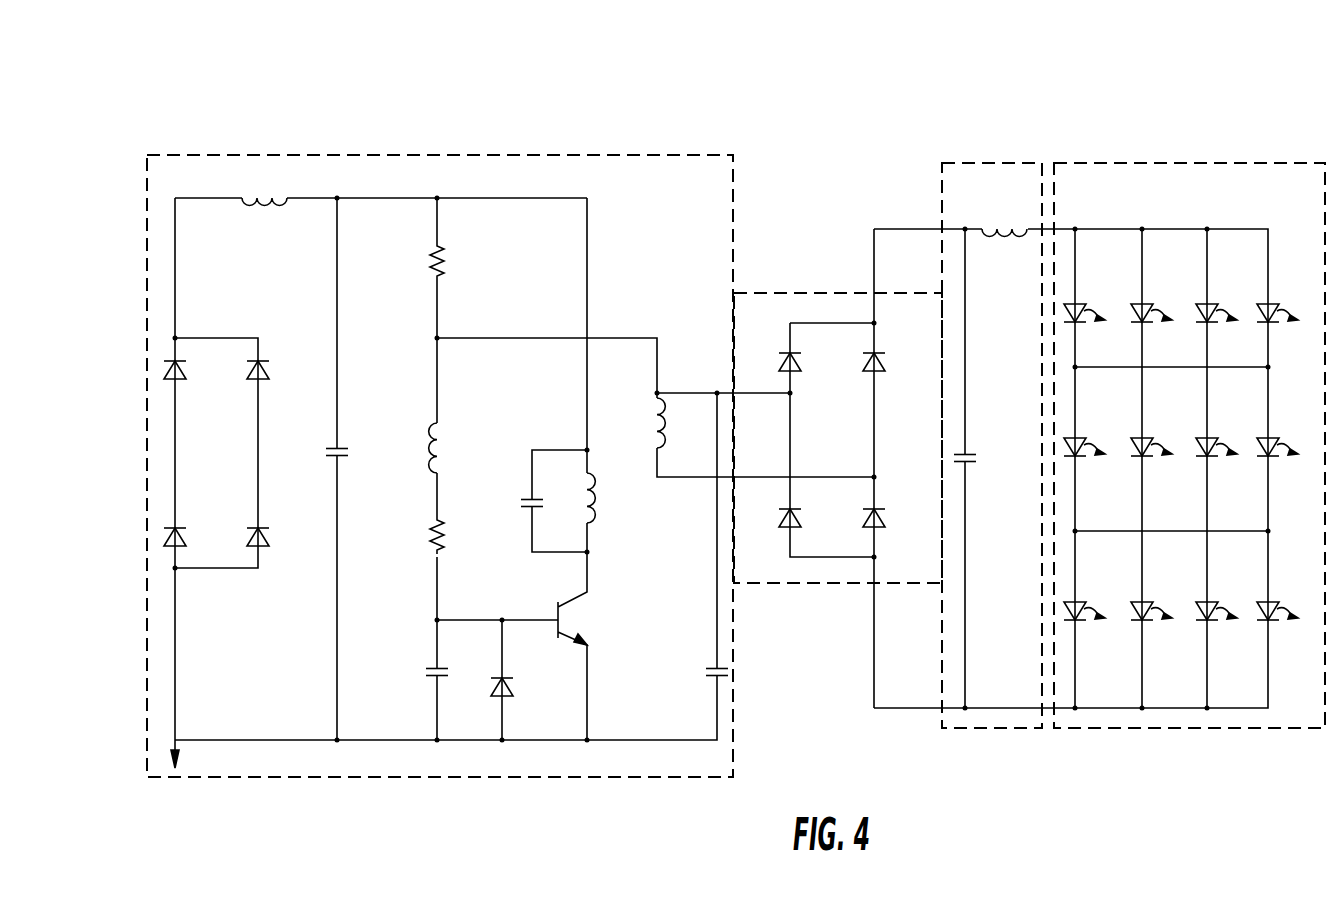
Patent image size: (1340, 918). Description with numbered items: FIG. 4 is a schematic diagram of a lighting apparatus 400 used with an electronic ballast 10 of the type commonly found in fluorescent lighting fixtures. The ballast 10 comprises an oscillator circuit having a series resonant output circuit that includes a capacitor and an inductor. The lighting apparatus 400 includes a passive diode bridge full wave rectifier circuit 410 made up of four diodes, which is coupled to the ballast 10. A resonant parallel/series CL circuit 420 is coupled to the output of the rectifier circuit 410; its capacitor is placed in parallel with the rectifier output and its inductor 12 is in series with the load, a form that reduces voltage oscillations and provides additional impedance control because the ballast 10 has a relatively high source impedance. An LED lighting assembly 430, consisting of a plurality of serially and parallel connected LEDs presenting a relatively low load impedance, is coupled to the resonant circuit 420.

The lighting apparatus 400 is at (1213, 47).
The electronic ballast 10 is at (733, 178).
The passive diode bridge full wave rectifier circuit 410 is at (777, 293).
The resonant parallel/series CL circuit 420 is at (973, 163).
The LED lighting assembly 430 is at (1160, 163).
The inductor 12 is at (1021, 211).